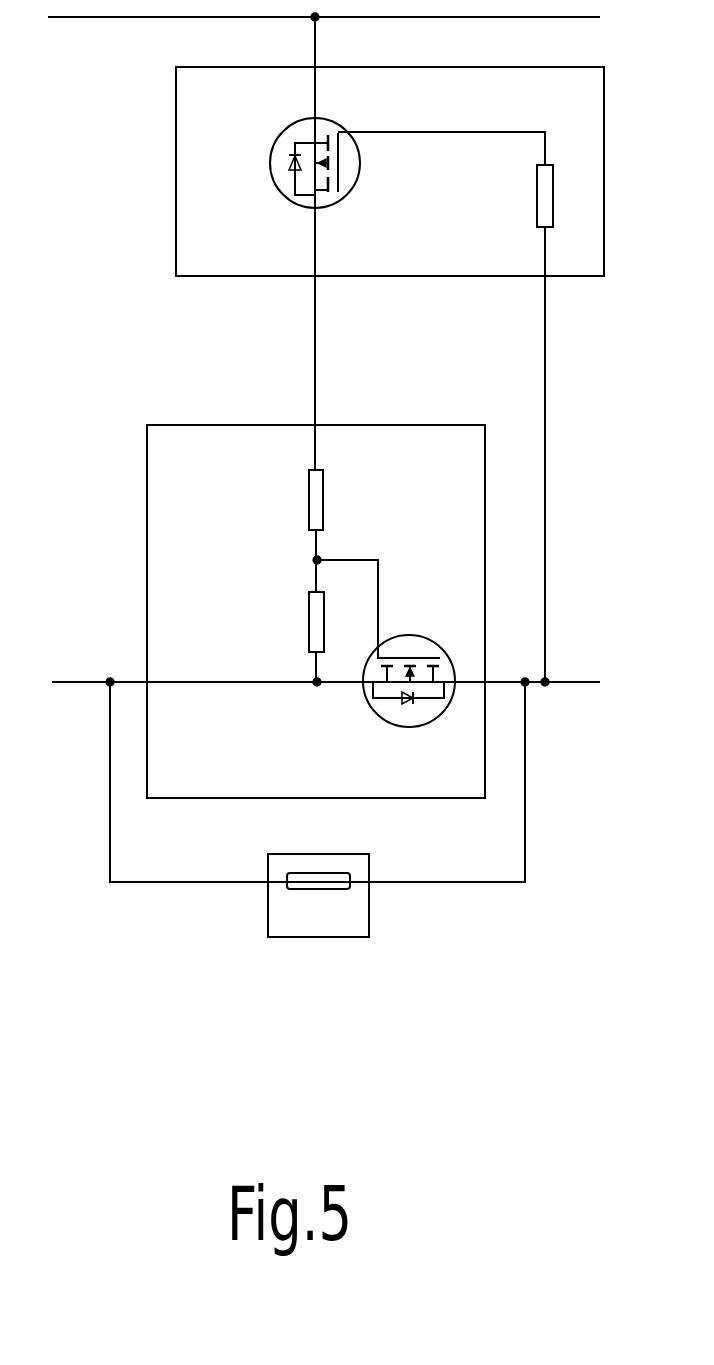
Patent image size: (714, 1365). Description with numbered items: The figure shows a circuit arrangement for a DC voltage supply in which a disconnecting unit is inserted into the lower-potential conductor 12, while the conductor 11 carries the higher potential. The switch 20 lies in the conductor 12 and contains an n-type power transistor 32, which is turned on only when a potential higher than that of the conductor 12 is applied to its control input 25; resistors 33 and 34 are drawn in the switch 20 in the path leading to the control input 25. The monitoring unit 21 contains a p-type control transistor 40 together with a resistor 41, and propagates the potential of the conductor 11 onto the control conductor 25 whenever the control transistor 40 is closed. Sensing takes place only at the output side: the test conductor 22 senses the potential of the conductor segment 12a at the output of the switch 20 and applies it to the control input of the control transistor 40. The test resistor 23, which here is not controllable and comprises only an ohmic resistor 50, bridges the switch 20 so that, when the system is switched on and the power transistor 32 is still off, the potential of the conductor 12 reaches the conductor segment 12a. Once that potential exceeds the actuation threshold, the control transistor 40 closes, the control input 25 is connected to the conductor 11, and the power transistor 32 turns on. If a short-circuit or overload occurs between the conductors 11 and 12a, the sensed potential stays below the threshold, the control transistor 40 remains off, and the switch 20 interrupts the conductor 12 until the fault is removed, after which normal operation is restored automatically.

The conductor 11 is at (120, 18).
The conductor 12 is at (78, 683).
The conductor segment 12a is at (582, 683).
The switch 20 is at (147, 553).
The monitoring unit 21 is at (176, 172).
The test conductor 22 is at (547, 525).
The test resistor 23 is at (268, 895).
The control input 25 is at (316, 420).
The power transistor 32 is at (407, 636).
The resistor 33 is at (309, 622).
The resistor 34 is at (309, 502).
The control transistor 40 is at (270, 163).
The resistor 41 is at (537, 190).
The ohmic resistor 50 is at (298, 892).